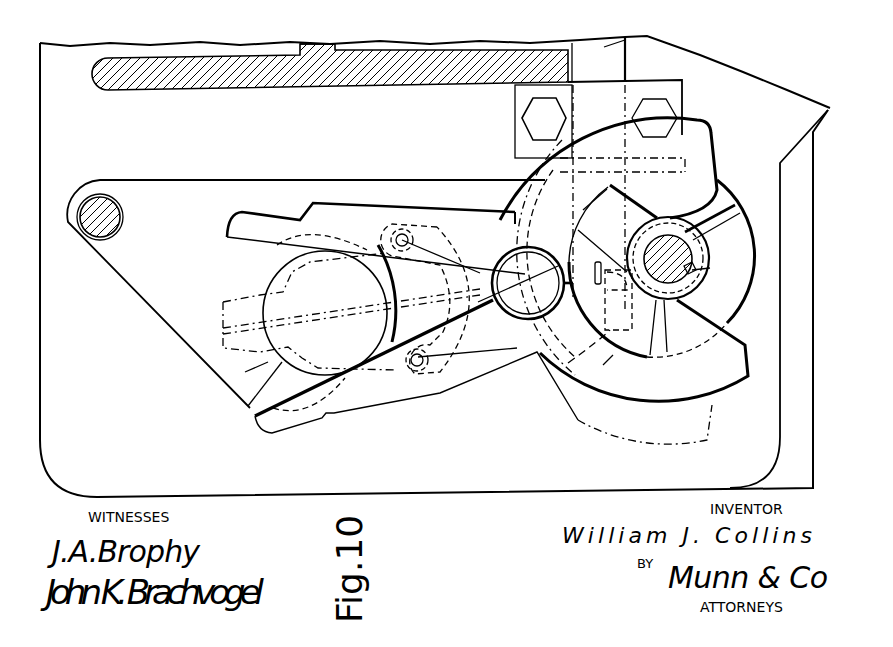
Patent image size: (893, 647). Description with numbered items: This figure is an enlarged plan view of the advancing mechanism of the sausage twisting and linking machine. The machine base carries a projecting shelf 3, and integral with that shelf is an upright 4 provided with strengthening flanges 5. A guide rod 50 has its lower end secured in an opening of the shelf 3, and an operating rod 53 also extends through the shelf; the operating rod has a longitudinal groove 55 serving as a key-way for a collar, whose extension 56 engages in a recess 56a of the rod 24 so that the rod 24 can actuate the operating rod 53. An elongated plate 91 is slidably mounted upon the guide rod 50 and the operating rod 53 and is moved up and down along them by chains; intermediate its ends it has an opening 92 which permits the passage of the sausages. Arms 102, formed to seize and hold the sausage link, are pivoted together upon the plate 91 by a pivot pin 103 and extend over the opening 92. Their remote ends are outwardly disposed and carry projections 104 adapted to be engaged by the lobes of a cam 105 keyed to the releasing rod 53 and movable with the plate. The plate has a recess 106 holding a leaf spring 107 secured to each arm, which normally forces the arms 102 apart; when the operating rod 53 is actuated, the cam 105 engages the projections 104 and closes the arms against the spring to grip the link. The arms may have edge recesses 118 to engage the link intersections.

The shelf 3 is at (458, 478).
The upright 4 is at (332, 46).
The strengthening flanges 5 is at (263, 88).
The rod 24 is at (604, 46).
The guide rod 50 is at (108, 205).
The operating rod 53 is at (704, 224).
The longitudinal groove 55 is at (693, 252).
The extension 56 is at (600, 350).
The recess 56a is at (586, 305).
The elongated plate 91 is at (163, 305).
The opening 92 is at (245, 372).
The arms 102 is at (358, 212).
The pivot pin 103 is at (519, 310).
The projections 104 is at (707, 180).
The cam 105 is at (710, 268).
The recess 106 is at (452, 300).
The leaf spring 107 is at (498, 200).
The edge recesses 118 is at (330, 252).